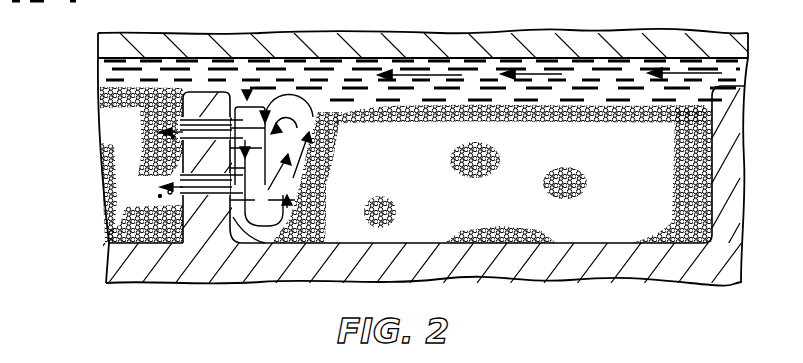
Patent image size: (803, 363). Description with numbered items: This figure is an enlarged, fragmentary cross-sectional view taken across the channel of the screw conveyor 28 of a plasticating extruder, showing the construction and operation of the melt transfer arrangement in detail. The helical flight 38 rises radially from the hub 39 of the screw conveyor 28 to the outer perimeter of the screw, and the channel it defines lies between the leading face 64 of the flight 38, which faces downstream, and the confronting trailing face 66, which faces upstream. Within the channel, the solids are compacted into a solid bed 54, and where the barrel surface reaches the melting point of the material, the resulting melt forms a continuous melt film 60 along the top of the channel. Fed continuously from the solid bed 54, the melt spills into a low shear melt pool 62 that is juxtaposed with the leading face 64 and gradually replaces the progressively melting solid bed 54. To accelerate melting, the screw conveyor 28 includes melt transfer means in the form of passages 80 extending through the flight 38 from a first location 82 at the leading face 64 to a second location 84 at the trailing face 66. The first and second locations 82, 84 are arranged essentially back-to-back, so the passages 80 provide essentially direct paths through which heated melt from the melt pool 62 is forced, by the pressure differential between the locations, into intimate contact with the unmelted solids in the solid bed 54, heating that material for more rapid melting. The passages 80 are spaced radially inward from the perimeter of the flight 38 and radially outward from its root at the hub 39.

The screw conveyor 28 is at (588, 251).
The helical flight 38 is at (204, 98).
The hub 39 is at (422, 243).
The solid bed 54 is at (540, 127).
The melt film 60 is at (622, 72).
The melt pool 62 is at (304, 128).
The leading face 64 is at (256, 246).
The trailing face 66 is at (180, 194).
The passages 80 is at (178, 174).
The first location 82 is at (236, 106).
The second location 84 is at (168, 106).